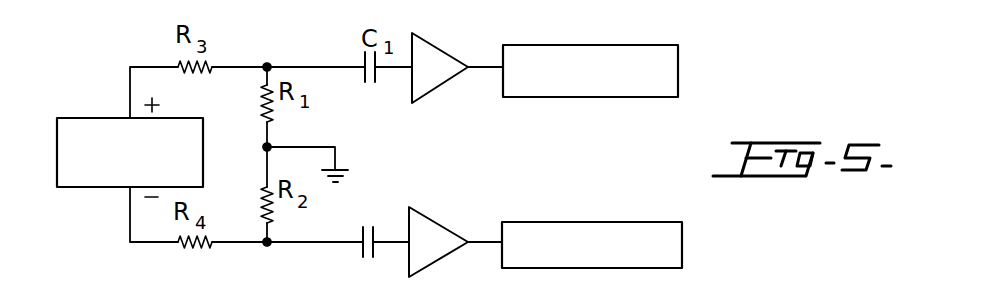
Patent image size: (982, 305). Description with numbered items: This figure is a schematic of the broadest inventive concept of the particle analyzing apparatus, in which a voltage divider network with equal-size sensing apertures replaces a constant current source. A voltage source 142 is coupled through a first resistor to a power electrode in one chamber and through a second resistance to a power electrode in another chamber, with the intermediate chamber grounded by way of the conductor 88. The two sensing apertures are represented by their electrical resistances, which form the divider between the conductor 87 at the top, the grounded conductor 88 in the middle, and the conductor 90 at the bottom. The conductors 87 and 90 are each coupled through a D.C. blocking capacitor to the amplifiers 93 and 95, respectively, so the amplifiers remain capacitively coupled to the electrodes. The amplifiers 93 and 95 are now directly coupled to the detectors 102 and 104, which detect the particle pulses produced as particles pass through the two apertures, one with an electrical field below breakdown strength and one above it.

The electrical conductor 87 is at (306, 67).
The electrical conductor 88 is at (318, 147).
The electrical conductor 90 is at (311, 242).
The amplifier 93 is at (437, 48).
The amplifier 95 is at (437, 224).
The detector 102 is at (603, 45).
The detector 104 is at (600, 222).
The voltage source 142 is at (93, 187).